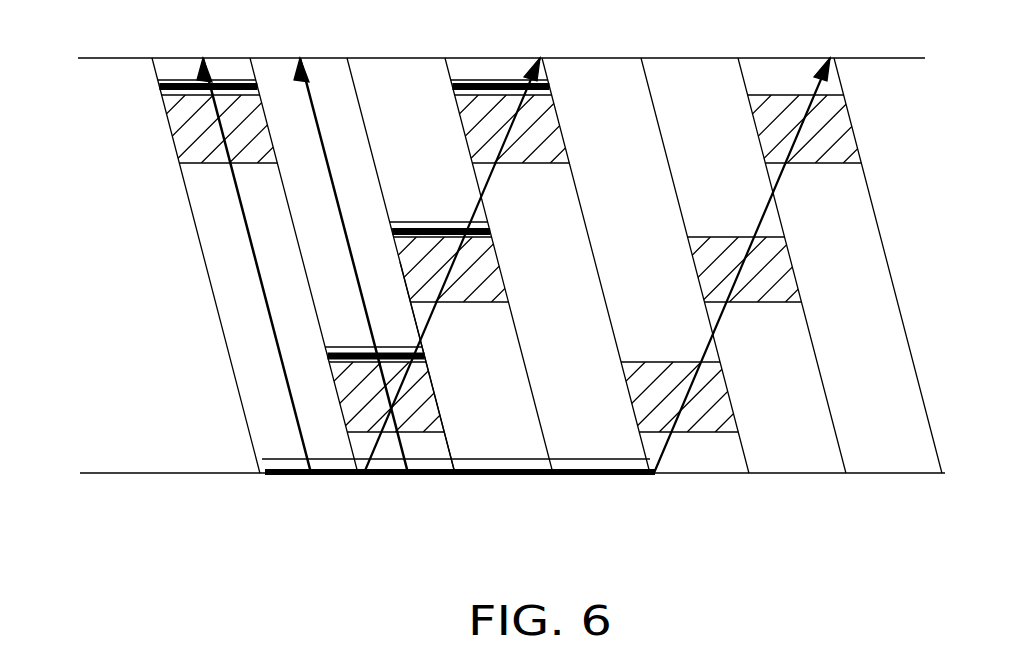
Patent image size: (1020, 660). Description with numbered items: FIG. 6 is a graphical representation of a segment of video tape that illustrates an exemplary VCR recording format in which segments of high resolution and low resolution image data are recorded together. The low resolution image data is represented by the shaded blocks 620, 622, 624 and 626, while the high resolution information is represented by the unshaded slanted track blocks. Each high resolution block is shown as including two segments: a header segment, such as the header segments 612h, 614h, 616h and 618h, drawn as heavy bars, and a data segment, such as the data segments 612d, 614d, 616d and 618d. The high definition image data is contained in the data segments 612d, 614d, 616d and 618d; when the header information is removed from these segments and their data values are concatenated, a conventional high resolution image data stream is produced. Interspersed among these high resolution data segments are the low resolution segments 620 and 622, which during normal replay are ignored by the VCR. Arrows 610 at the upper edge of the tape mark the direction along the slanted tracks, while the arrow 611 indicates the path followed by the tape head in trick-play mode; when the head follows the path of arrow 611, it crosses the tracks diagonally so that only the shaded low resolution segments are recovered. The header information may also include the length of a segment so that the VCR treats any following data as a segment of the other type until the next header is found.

The track direction arrows 610 is at (300, 58).
The arrow 611 is at (528, 57).
The data segment 612d is at (242, 375).
The header segment 612h is at (263, 468).
The data segment 614d is at (165, 70).
The header segment 614h is at (162, 84).
The data segment 616d is at (443, 452).
The header segment 616h is at (457, 460).
The data segment 618d is at (368, 182).
The header segment 618h is at (427, 358).
The low resolution image segment 620 is at (187, 154).
The low resolution image segment 622 is at (428, 403).
The low resolution image segment 624 is at (493, 274).
The recorded data block 626 is at (553, 128).